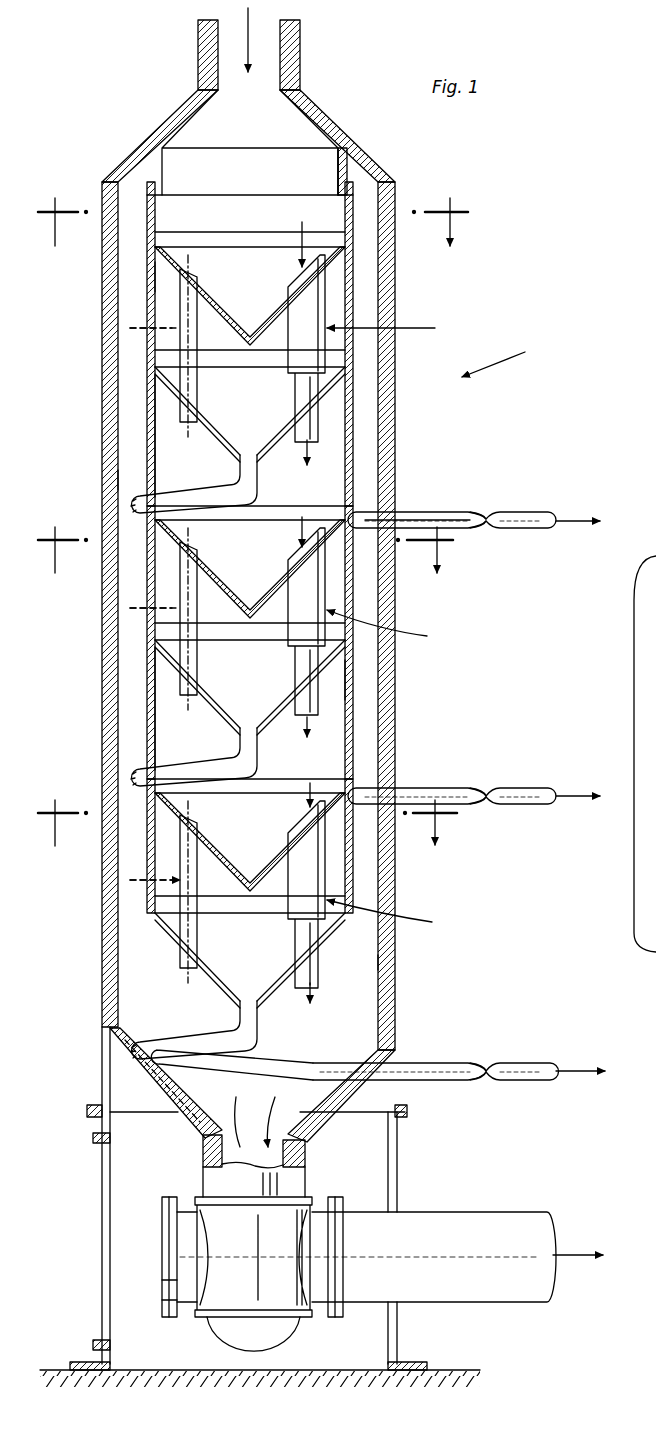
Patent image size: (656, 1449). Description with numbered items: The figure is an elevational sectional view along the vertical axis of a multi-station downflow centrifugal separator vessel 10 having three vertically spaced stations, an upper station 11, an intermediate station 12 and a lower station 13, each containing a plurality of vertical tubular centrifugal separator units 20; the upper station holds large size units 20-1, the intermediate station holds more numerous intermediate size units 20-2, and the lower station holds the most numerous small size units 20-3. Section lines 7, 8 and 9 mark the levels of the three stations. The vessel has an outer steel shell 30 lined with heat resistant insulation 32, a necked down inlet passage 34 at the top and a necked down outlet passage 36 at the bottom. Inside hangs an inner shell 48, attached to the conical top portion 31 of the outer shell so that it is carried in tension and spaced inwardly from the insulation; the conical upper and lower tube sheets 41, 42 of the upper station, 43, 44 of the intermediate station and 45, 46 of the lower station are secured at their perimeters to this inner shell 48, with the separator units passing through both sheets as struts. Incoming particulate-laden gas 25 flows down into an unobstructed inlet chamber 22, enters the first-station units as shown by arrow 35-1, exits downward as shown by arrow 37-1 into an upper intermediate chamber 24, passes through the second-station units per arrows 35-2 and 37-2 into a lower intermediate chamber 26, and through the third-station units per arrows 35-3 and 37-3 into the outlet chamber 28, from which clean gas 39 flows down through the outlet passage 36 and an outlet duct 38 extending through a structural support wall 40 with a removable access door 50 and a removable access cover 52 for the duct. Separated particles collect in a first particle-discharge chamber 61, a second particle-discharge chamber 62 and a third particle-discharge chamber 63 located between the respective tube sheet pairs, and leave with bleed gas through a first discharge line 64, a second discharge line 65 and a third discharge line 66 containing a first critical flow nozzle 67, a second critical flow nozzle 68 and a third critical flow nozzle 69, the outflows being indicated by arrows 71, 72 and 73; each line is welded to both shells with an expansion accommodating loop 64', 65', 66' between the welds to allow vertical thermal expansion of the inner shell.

The section line 7- 7 is at (253, 237).
The section line 8- 8 is at (245, 559).
The section line 9- 9 is at (247, 833).
The multi-station downflow centrifugal separator vessel 10 is at (509, 360).
The upper station 11 is at (358, 283).
The intermediate station 12 is at (358, 603).
The lower station 13 is at (358, 876).
The centrifugal separator unit 20 is at (100, 334).
The large size units 20-1 is at (401, 330).
The intermediate size units 20-2 is at (398, 629).
The small size units 20-3 is at (399, 916).
The inlet chamber 22 is at (260, 136).
The upper intermediate chamber 24 is at (180, 436).
The incoming particulate-laden gas 25 is at (262, 12).
The lower intermediate chamber 26 is at (179, 709).
The outlet chamber 28 is at (207, 1080).
The outer steel shell 30 is at (102, 417).
The conical top portion 31 is at (168, 118).
The heat resistant insulation 32 is at (338, 172).
The inlet passage 34 is at (228, 27).
The gas inflow arrow to first-station units 35-1 is at (271, 249).
The gas inflow arrows to second-station units 35-2 is at (268, 534).
The gas inflow arrow to third-station units 35-3 is at (266, 804).
The outlet passage 36 is at (222, 1160).
The gas outflow arrow from first-station units 37-1 is at (385, 443).
The gas outflow arrow from second-station units 37-2 is at (386, 721).
The gas outflow arrow from third-station units 37-3 is at (337, 999).
The outlet duct 38 is at (489, 1222).
The clean gas 39 is at (580, 1288).
The structural support wall 40 is at (397, 1348).
The upper tube sheet of upper station 41 is at (280, 348).
The lower tube sheet of upper station 42 is at (209, 465).
The upper tube sheet of intermediate station 43 is at (278, 621).
The lower tube sheet of intermediate station 44 is at (207, 740).
The upper tube sheet of lower station 45 is at (278, 894).
The lower tube sheet of lower station 46 is at (208, 1014).
The inner shell 48 is at (147, 272).
The removable access door 50 is at (100, 1265).
The removable access cover 52 is at (165, 1283).
The first particle-discharge chamber 61 is at (250, 414).
The second particle-discharge chamber 62 is at (250, 687).
The third particle-discharge chamber 63 is at (250, 960).
The first discharge line 64 is at (452, 500).
The expansion accommodating loop 64' is at (250, 500).
The second discharge line 65 is at (452, 773).
The expansion accommodating loop 65' is at (250, 771).
The third discharge line 66 is at (436, 1050).
The expansion accommodating loop 66' is at (248, 1056).
The first critical flow nozzle 67 is at (490, 512).
The second critical flow nozzle 68 is at (488, 788).
The third critical flow nozzle 69 is at (490, 1063).
The discharge flow arrow 71 is at (562, 538).
The discharge flow arrow 72 is at (560, 818).
The discharge flow arrow 73 is at (575, 1088).